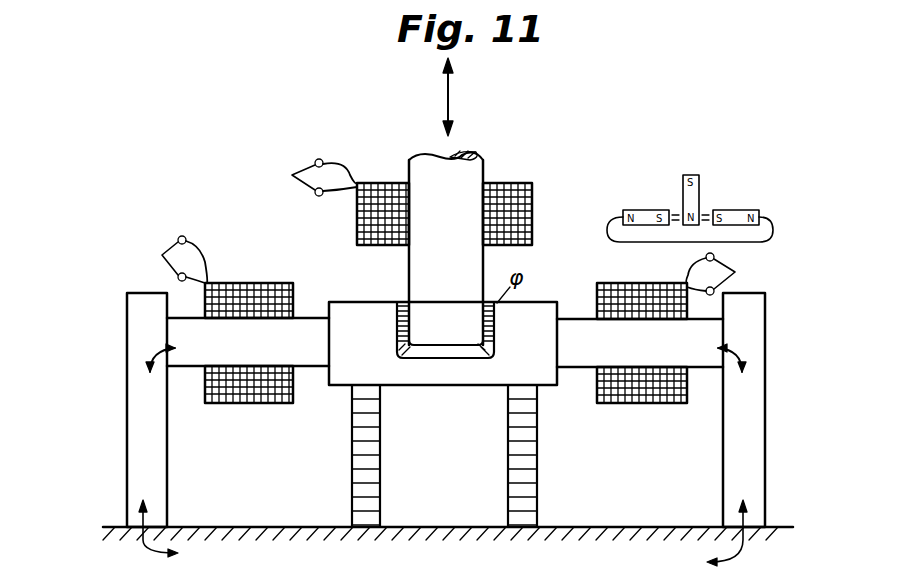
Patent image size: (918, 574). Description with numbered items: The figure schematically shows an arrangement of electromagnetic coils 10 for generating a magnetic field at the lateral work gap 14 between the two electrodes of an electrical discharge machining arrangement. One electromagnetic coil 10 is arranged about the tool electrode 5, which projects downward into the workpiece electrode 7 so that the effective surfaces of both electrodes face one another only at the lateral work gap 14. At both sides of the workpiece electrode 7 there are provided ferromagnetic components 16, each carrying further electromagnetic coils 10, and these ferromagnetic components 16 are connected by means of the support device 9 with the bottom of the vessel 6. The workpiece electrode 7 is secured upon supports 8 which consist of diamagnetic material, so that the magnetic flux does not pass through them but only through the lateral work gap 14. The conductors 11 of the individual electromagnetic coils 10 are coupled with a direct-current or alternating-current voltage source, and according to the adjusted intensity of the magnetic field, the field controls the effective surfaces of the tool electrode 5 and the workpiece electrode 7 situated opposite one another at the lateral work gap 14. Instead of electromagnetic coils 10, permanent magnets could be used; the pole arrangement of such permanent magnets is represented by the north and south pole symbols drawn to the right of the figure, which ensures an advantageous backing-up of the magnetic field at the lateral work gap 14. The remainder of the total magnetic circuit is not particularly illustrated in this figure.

The tool electrode 5 is at (418, 172).
The vessel 6 is at (615, 532).
The workpiece electrode 7 is at (452, 375).
The supports 8 is at (520, 443).
The support device 9 is at (160, 447).
The electromagnetic coils 10 is at (242, 295).
The conductors 11 is at (450, 227).
The lateral work gap 14 is at (405, 297).
The ferromagnetic components 16 is at (307, 330).